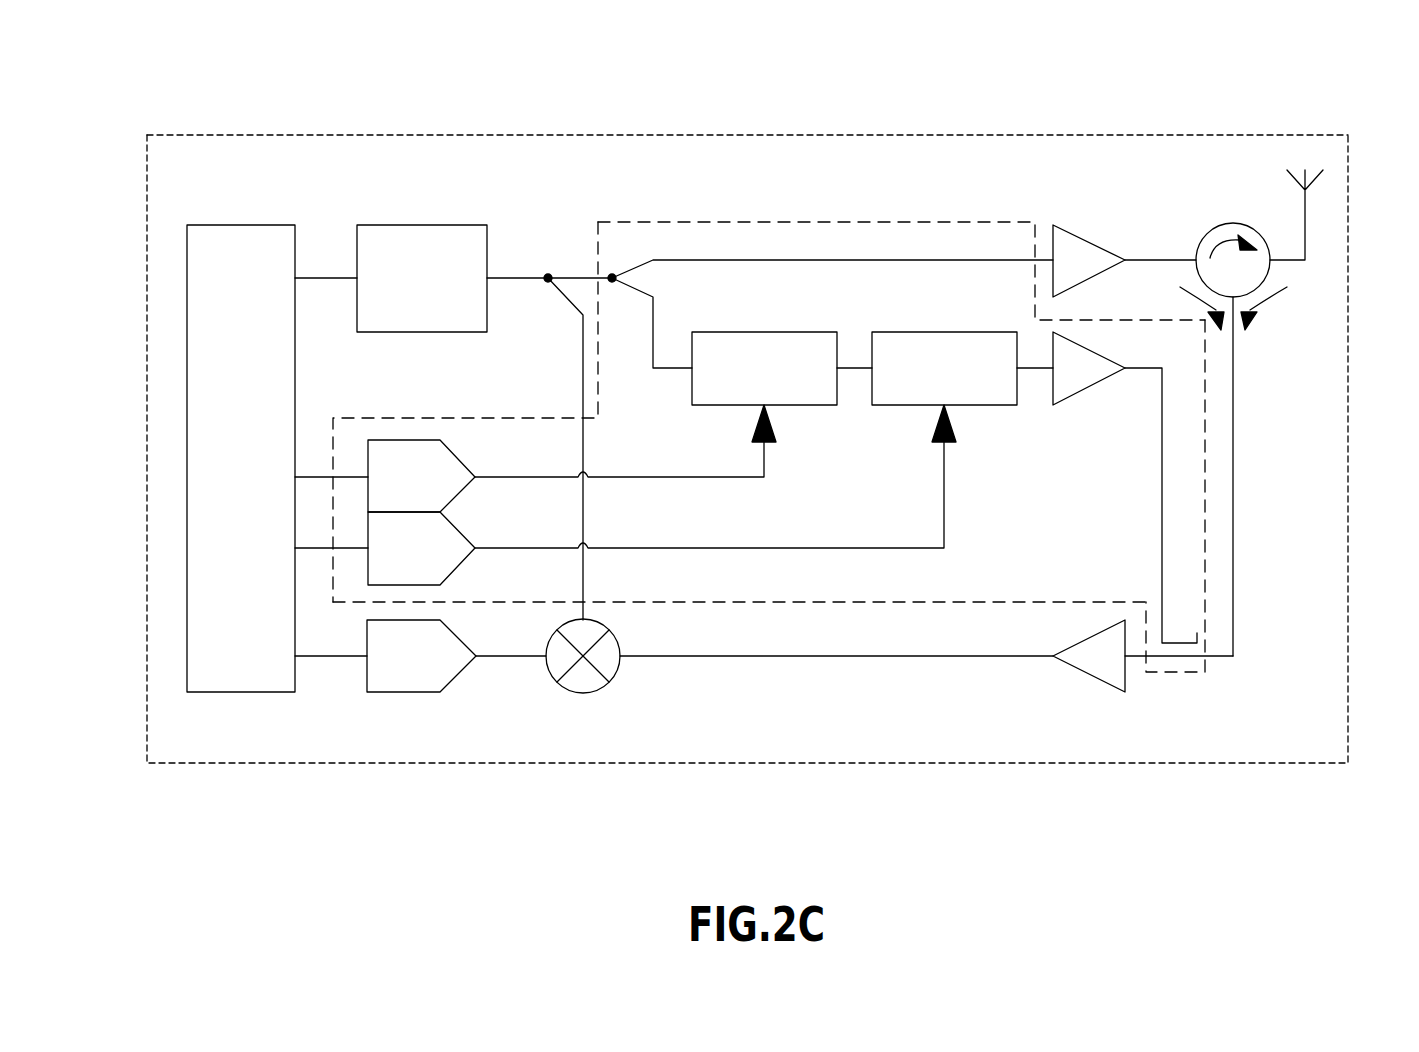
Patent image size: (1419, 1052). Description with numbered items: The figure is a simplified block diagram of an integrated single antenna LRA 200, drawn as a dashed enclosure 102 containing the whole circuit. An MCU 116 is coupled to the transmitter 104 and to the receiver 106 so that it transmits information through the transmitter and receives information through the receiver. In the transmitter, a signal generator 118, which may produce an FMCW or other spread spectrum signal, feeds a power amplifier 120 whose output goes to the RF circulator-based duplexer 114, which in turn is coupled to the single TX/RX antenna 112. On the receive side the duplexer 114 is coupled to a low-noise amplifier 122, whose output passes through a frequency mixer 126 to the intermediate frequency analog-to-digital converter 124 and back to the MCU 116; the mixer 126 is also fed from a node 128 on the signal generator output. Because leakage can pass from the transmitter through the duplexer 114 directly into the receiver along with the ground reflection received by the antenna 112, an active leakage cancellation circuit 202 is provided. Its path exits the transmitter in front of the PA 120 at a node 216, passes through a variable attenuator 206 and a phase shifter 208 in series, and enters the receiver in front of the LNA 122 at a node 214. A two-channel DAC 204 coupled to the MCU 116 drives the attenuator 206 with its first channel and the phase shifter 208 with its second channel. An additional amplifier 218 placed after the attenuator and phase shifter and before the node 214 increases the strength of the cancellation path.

The integrated single antenna LRA 200 is at (133, 58).
The transceiver circuit 102 is at (217, 135).
The transmitter 104 is at (533, 206).
The receiver 106 is at (836, 698).
The TX/RX antenna 112 is at (1305, 218).
The RF circulator-based duplexer 114 is at (1233, 223).
The MCU 116 is at (241, 225).
The signal generator 118 is at (415, 225).
The power amplifier (PA) 120 is at (1090, 243).
The low-noise amplifier (LNA) 122 is at (1090, 675).
The intermediate frequency (IF) analog-to-digital converter (ADC) 124 is at (408, 692).
The frequency mixer 126 is at (585, 693).
The signal splitting node 128 is at (550, 262).
The active leakage cancellation circuit 202 is at (870, 210).
The digital-to-analog converter (DAC) 204 is at (465, 535).
The variable attenuator 206 is at (765, 332).
The phase shifter 208 is at (945, 332).
The node or location 214 is at (1179, 664).
The node or location 216 is at (615, 272).
The additional amplifier 218 is at (1085, 400).